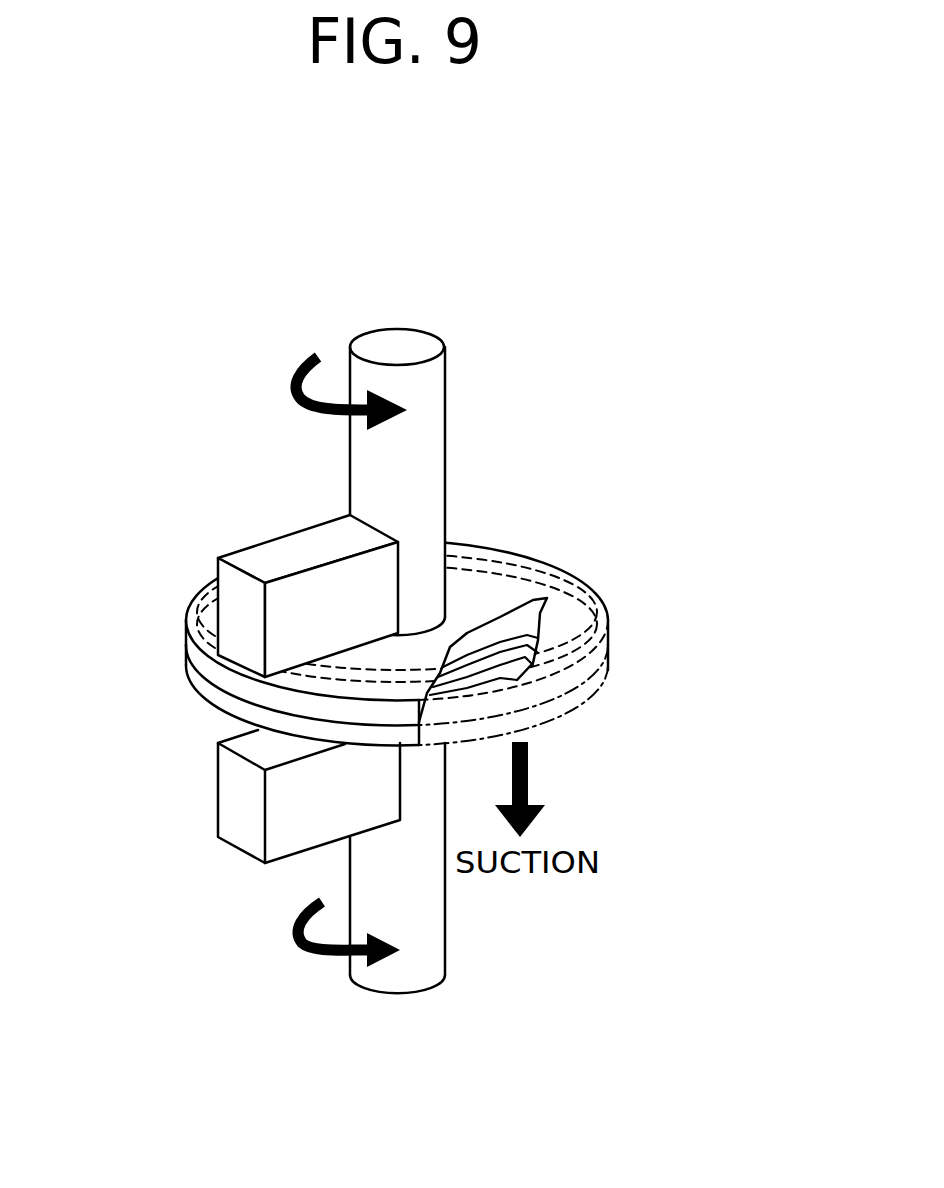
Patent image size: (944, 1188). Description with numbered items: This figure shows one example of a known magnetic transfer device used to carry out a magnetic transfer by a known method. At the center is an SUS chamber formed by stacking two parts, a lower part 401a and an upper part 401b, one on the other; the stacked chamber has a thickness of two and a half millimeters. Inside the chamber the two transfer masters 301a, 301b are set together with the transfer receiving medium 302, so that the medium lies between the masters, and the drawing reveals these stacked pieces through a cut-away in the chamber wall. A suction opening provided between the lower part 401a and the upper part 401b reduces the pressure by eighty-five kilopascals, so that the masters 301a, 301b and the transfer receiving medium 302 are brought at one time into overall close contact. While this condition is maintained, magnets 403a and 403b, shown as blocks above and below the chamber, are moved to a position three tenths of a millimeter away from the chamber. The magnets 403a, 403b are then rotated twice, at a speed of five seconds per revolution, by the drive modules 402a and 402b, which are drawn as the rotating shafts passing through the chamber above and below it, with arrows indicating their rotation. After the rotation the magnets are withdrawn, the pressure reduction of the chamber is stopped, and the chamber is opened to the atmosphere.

The transfer master 301a is at (585, 677).
The transfer master 301b is at (657, 700).
The transfer receiving medium 302 is at (458, 638).
The chamber part 401a is at (560, 707).
The chamber part 401b is at (538, 566).
The drive module 402a is at (427, 922).
The drive module 402b is at (417, 347).
The magnet 403a is at (232, 793).
The magnet 403b is at (232, 597).